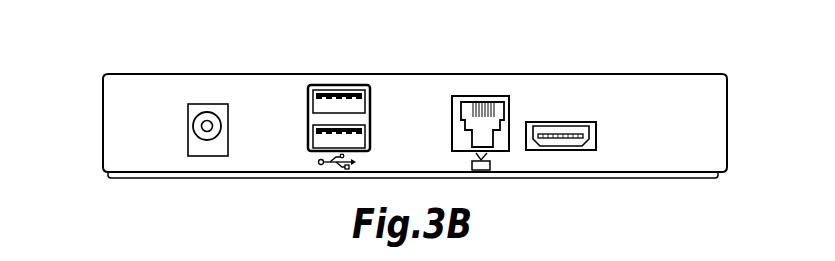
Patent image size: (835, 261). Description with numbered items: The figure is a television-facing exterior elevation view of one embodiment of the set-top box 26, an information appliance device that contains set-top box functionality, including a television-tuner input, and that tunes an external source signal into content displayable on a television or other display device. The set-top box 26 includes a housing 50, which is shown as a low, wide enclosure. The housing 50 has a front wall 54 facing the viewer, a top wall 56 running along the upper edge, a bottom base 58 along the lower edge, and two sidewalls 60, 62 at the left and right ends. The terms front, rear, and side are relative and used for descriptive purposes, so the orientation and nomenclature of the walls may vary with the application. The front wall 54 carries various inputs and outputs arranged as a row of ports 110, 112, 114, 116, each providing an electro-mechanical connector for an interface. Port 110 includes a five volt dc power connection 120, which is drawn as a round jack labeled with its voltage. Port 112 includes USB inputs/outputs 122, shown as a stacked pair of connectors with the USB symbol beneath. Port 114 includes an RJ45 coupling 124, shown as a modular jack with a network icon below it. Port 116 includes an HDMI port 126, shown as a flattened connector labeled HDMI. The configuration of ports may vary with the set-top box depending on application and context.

The set-top box 26 is at (126, 66).
The housing 50 is at (698, 66).
The front wall 54 is at (137, 163).
The top wall 56 is at (173, 73).
The bottom base 58 is at (247, 180).
The sidewall 60 is at (103, 95).
The sidewall 62 is at (727, 123).
The port 110 is at (218, 110).
The port 112 is at (337, 85).
The port 114 is at (484, 97).
The port 116 is at (561, 122).
The 5V dc power connection 120 is at (205, 148).
The USB inputs/outputs 122 is at (318, 145).
The RJ45 coupling 124 is at (498, 141).
The HDMI port 126 is at (590, 150).